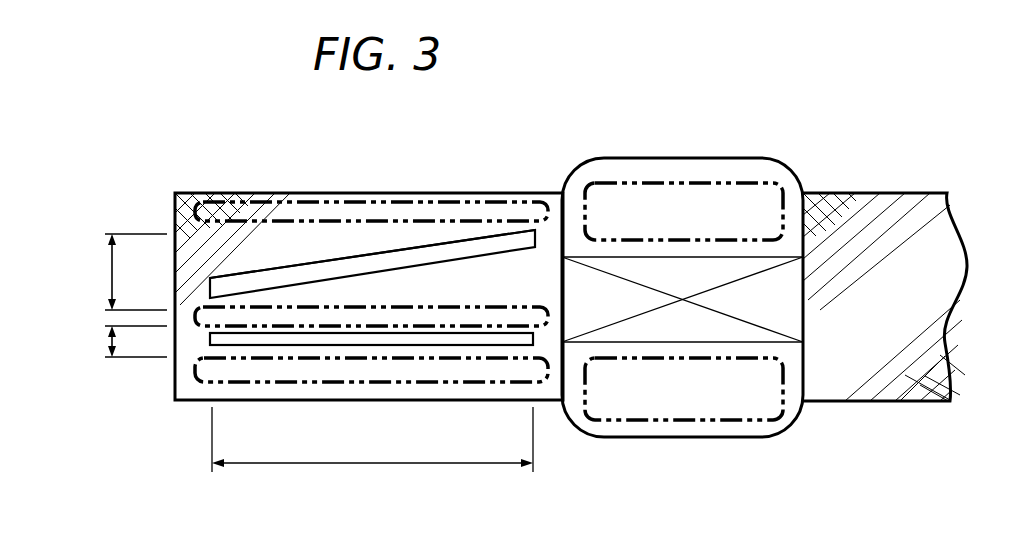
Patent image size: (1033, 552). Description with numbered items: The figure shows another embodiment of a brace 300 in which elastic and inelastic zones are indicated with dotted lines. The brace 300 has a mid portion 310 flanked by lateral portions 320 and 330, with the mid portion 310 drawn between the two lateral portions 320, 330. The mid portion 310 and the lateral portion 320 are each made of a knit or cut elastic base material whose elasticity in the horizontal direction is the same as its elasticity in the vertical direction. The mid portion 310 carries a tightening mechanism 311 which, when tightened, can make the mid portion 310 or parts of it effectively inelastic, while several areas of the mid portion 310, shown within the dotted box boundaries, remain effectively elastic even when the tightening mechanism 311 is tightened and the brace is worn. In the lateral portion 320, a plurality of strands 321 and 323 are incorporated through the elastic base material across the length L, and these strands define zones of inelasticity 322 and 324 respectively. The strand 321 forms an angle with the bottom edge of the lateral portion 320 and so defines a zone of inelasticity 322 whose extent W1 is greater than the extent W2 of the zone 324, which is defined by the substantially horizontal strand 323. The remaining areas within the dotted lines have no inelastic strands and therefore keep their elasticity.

The brace 300 is at (808, 94).
The mid portion 310 is at (680, 158).
The tightening mechanism 311 is at (655, 342).
The lateral portion 320 is at (372, 193).
The strand 321 is at (428, 246).
The zone of inelasticity 322 is at (490, 234).
The strand 323 is at (270, 330).
The zone of inelasticity 324 is at (342, 334).
The lateral portion 330 is at (855, 193).
The extent of zone of inelasticity W1 is at (112, 272).
The extent of zone of inelasticity W2 is at (112, 341).
The length L is at (394, 463).